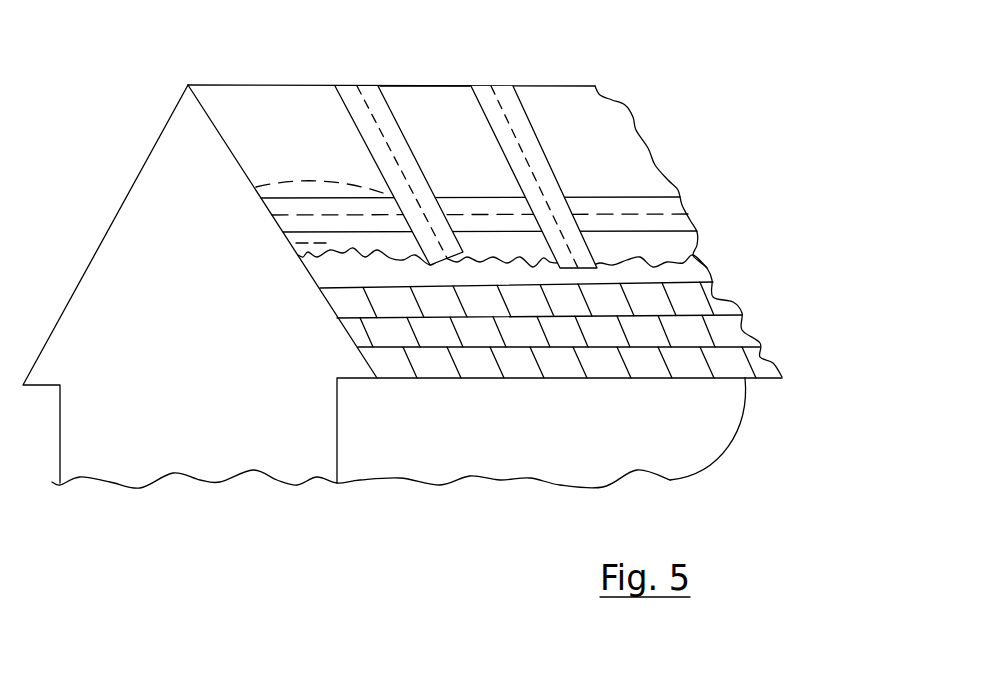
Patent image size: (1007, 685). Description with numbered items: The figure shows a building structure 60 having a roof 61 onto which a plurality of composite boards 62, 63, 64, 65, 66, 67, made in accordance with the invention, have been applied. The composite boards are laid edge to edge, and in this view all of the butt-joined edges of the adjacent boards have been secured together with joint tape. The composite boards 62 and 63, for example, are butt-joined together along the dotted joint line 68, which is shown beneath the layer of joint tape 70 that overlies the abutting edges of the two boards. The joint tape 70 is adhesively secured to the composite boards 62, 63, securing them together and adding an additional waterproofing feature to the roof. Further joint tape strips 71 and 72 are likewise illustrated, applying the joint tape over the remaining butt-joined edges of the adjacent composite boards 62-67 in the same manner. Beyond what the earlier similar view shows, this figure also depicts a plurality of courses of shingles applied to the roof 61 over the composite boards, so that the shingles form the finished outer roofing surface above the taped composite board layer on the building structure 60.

The building structure 60 is at (712, 442).
The roof 61 is at (333, 312).
The composite board 62 is at (295, 242).
The composite board 63 is at (540, 245).
The composite board 64 is at (675, 242).
The composite board 65 is at (298, 108).
The composite board 66 is at (434, 105).
The composite board 67 is at (587, 102).
The joint line 68 is at (256, 187).
The joint tape 70 is at (450, 245).
The joint tape strip 71 is at (548, 157).
The joint tape strip 72 is at (480, 197).